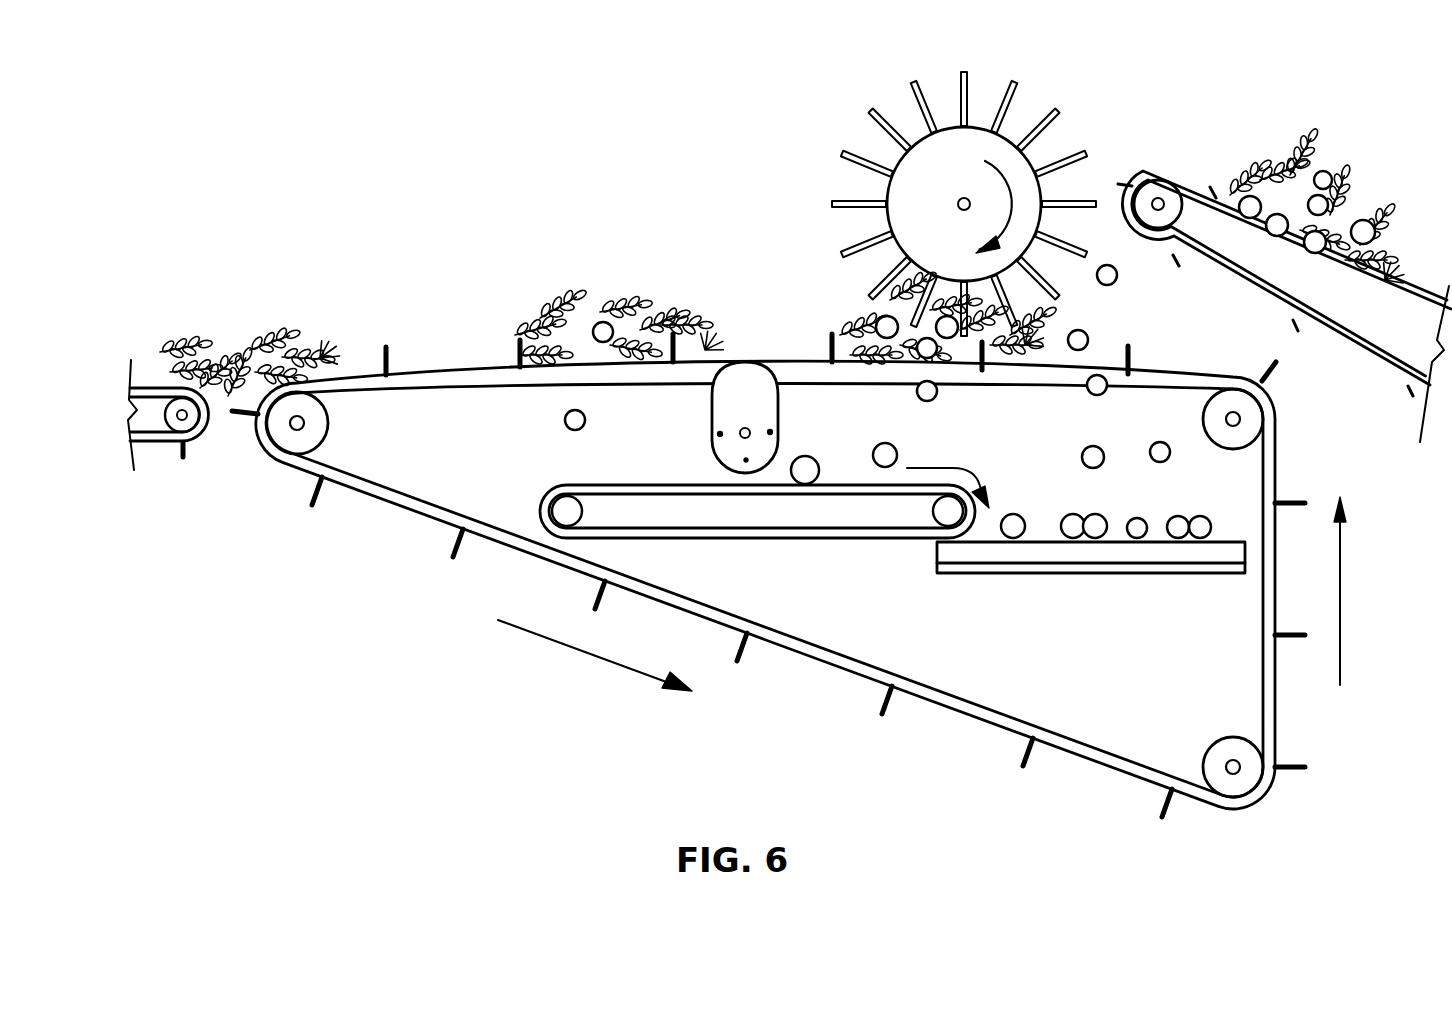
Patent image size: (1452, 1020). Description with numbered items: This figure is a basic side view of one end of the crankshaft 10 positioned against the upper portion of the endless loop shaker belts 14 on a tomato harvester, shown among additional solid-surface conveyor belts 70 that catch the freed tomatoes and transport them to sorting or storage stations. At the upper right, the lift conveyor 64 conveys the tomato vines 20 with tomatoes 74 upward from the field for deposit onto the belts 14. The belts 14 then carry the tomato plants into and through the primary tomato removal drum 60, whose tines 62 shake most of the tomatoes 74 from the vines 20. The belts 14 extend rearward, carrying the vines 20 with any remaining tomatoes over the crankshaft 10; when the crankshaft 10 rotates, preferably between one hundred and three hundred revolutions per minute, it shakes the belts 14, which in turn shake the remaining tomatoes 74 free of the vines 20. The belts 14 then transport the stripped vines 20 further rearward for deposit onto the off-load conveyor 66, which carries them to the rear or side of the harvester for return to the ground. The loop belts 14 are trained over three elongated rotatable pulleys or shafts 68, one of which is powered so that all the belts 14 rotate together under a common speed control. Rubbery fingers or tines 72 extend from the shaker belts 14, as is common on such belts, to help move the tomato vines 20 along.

The crankshaft 10 is at (742, 372).
The endless loop shaker belts 14 is at (812, 383).
The vines 20 is at (235, 345).
The primary tomato removal drum 60 is at (987, 157).
The tines 62 is at (855, 203).
The lift conveyor 64 is at (1158, 192).
The off-load conveyor 66 is at (141, 393).
The pulleys or shafts 68 is at (292, 443).
The solid-surface conveyor belts 70 is at (935, 575).
The fingers or tines 72 is at (1130, 343).
The tomatoes 74 is at (566, 421).